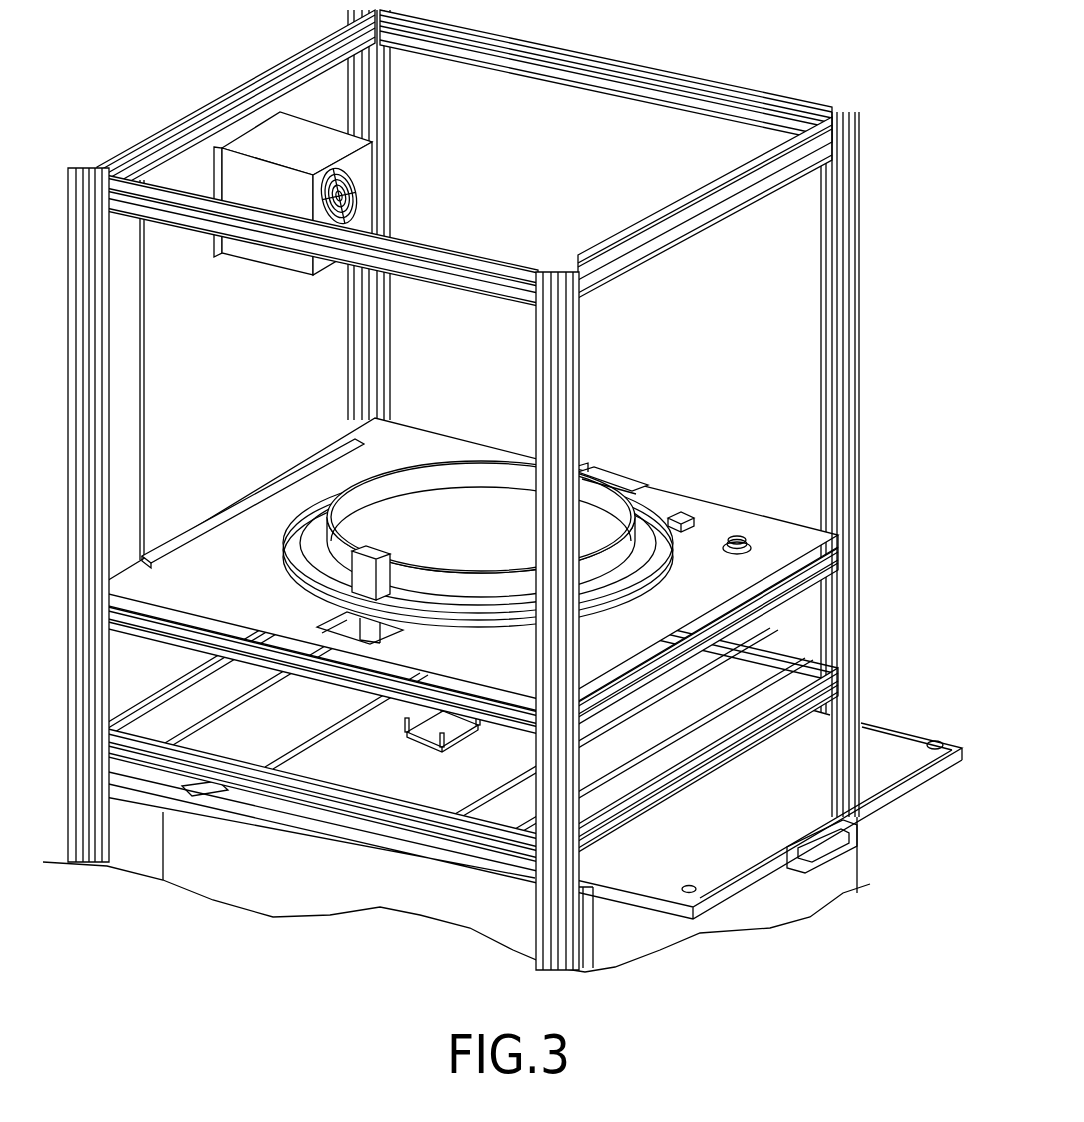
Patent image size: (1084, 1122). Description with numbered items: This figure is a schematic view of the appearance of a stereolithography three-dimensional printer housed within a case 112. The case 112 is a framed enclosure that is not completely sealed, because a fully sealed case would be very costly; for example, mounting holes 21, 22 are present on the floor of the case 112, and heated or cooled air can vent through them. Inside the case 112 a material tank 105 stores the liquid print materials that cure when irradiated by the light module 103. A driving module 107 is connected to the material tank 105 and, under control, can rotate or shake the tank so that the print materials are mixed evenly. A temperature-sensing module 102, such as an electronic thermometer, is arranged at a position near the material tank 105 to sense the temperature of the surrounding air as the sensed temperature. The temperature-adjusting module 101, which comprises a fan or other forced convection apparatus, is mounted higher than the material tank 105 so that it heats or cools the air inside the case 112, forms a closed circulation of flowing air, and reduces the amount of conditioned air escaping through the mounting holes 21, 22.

The case 112 is at (502, 490).
The temperature-adjusting module 101 is at (316, 137).
The material tank 105 is at (473, 477).
The mounting hole 22 is at (608, 473).
The temperature-sensing module 102 is at (683, 513).
The mounting hole 21 is at (333, 622).
The driving module 107 is at (503, 553).
The light module 103 is at (425, 733).